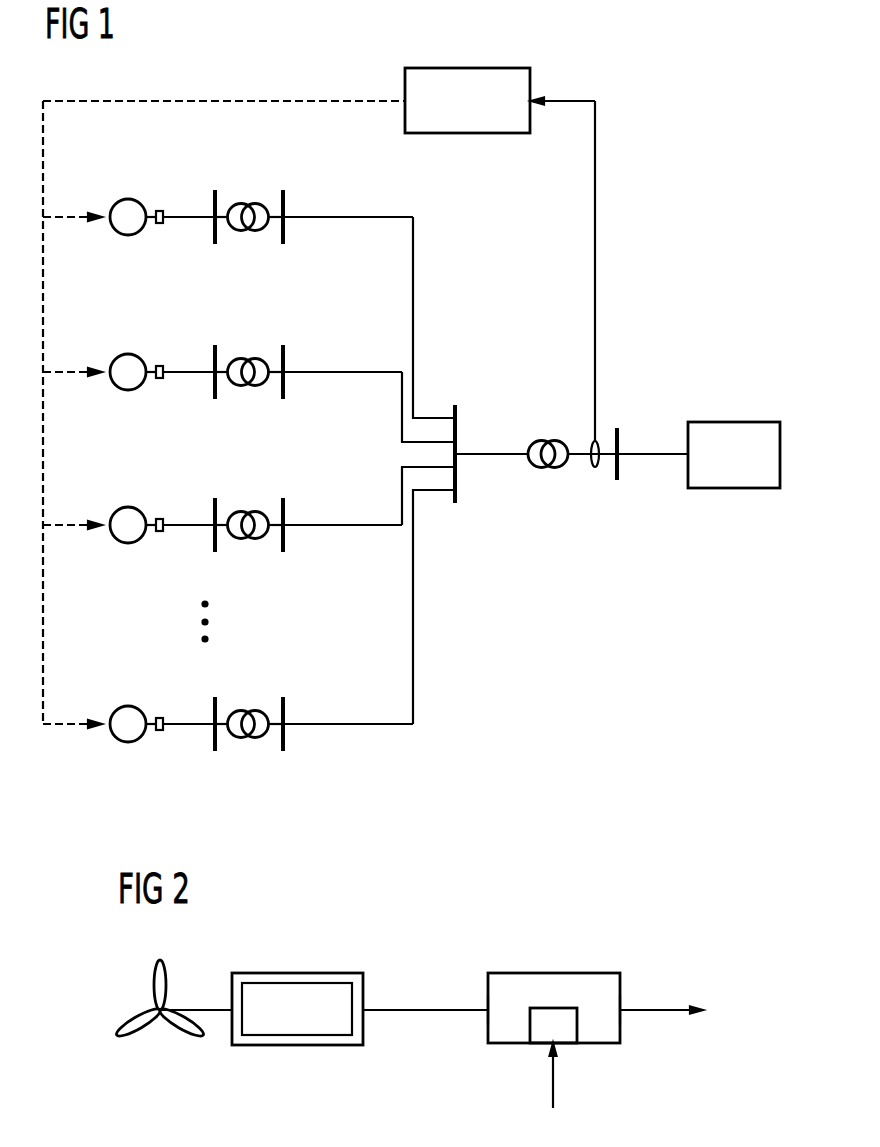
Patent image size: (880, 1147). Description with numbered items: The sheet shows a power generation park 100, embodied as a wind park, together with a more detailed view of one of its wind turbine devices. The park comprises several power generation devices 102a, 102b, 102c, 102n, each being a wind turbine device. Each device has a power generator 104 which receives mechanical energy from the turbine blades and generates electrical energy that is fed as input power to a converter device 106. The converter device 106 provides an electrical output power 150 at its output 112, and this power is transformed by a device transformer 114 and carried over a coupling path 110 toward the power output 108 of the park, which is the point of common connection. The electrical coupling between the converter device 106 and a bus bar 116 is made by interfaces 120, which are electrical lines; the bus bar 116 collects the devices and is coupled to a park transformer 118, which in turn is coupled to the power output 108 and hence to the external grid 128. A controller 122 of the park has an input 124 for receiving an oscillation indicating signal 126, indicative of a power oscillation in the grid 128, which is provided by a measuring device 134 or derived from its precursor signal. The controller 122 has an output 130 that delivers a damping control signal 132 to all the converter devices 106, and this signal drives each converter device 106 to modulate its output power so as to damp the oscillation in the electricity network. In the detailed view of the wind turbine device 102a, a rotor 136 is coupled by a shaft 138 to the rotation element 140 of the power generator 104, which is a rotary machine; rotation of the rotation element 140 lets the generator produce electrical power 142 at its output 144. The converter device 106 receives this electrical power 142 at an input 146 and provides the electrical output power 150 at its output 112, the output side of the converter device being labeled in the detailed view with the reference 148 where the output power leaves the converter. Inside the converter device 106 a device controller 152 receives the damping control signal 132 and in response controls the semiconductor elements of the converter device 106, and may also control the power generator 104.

In FIG. 1, the power generation park 100 is at (413, 408).
In FIG. 1, the power generation device 102a is at (249, 276).
In FIG. 2, the power generation device 102a is at (410, 1002).
In FIG. 1, the power generation device 102b is at (249, 365).
In FIG. 1, the power generation device 102c is at (249, 515).
In FIG. 1, the power generation device 102n is at (249, 638).
In FIG. 1, the power generator 104 is at (124, 444).
In FIG. 2, the power generator 104 is at (298, 973).
In FIG. 1, the converter device 106 is at (144, 499).
In FIG. 2, the converter device 106 is at (553, 973).
In FIG. 1, the power output 108 is at (619, 468).
In FIG. 1, the coupling path 110 is at (348, 498).
In FIG. 1, the output 112 is at (164, 445).
In FIG. 1, the device transformer 114 is at (249, 444).
In FIG. 1, the bus bar 116 is at (456, 478).
In FIG. 1, the park transformer 118 is at (548, 440).
In FIG. 1, the interfaces 120 is at (249, 487).
In FIG. 1, the controller 122 is at (470, 133).
In FIG. 1, the input 124 is at (532, 104).
In FIG. 1, the oscillation indicating signal 126 is at (595, 228).
In FIG. 1, the external grid 128 is at (735, 422).
In FIG. 1, the output 130 is at (405, 100).
In FIG. 1, the damping control signal 132 is at (233, 100).
In FIG. 2, the damping control signal 132 is at (555, 1082).
In FIG. 1, the measuring device 134 is at (600, 468).
In FIG. 2, the rotor 136 is at (160, 1034).
In FIG. 2, the shaft 138 is at (207, 1009).
In FIG. 2, the rotation element 140 is at (297, 1045).
In FIG. 2, the electrical power 142 is at (436, 1008).
In FIG. 2, the output 144 is at (364, 1013).
In FIG. 2, the input 146 is at (487, 1013).
In FIG. 2, the converter output 148 is at (621, 1013).
In FIG. 1, the electrical output power 150 is at (189, 496).
In FIG. 2, the electrical output power 150 is at (668, 1006).
In FIG. 2, the device controller 152 is at (541, 1045).